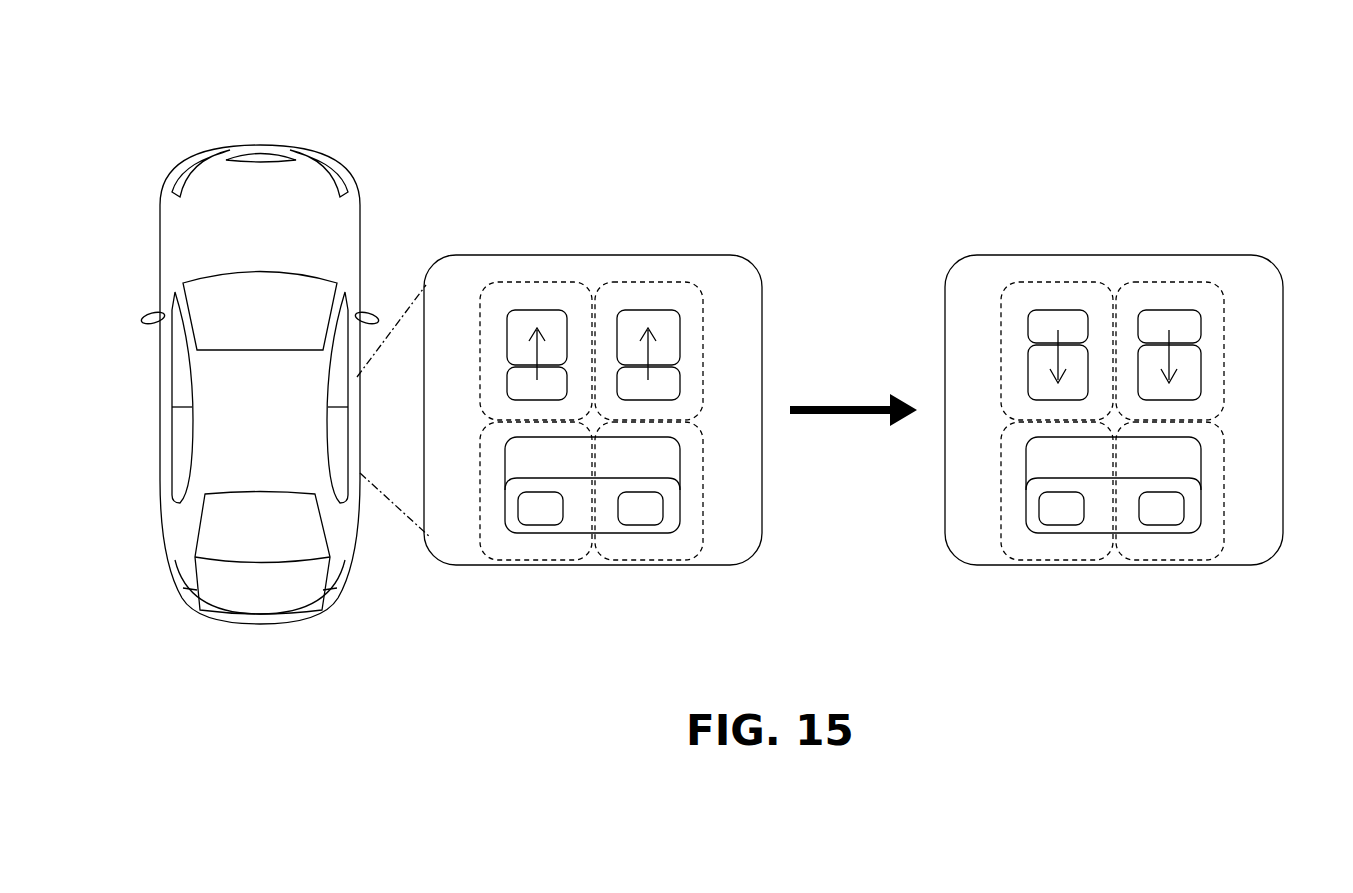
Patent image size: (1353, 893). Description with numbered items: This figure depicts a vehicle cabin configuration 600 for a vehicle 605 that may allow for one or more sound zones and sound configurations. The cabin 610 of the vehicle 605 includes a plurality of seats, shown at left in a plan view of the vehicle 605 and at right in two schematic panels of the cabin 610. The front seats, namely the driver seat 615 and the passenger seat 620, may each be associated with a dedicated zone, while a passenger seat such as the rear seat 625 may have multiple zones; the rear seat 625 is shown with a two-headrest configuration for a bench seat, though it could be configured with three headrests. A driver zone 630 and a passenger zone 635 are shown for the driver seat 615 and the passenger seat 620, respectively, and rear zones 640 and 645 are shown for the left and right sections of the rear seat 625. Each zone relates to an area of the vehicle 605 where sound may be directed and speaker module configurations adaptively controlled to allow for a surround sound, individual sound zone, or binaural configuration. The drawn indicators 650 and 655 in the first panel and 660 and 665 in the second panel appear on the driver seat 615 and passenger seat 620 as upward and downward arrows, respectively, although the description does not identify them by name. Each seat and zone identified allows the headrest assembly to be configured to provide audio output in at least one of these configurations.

The vehicle cabin configuration 600 is at (188, 106).
The vehicle 605 is at (160, 238).
The cabin 610 is at (736, 257).
The driver seat 615 is at (527, 309).
The passenger seat 620 is at (668, 327).
The rear seat 625 is at (577, 523).
The driver zone 630 is at (481, 297).
The passenger zone 635 is at (692, 367).
The rear zone 640 is at (495, 512).
The rear zone 645 is at (690, 525).
The first upward indicator 650 is at (541, 328).
The second upward indicator 655 is at (652, 328).
The first downward indicator 660 is at (1062, 330).
The second downward indicator 665 is at (1172, 330).